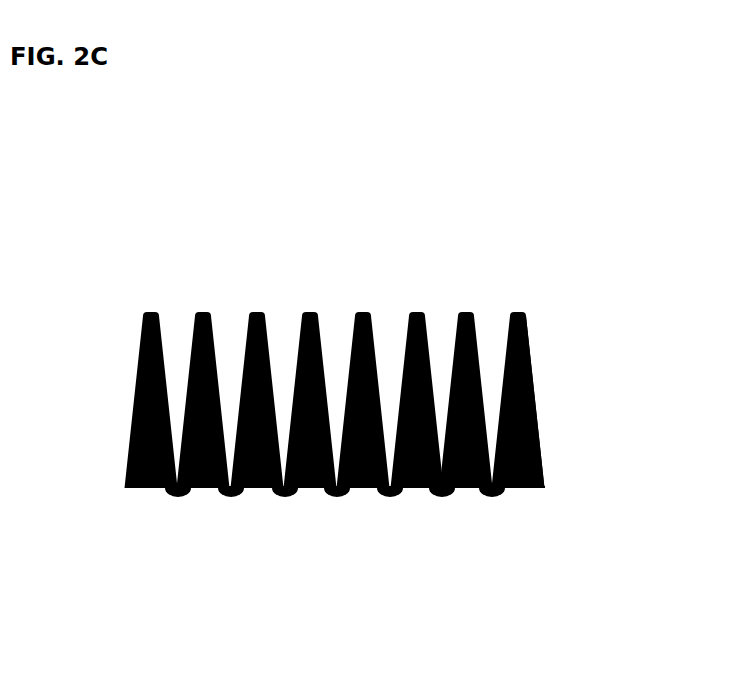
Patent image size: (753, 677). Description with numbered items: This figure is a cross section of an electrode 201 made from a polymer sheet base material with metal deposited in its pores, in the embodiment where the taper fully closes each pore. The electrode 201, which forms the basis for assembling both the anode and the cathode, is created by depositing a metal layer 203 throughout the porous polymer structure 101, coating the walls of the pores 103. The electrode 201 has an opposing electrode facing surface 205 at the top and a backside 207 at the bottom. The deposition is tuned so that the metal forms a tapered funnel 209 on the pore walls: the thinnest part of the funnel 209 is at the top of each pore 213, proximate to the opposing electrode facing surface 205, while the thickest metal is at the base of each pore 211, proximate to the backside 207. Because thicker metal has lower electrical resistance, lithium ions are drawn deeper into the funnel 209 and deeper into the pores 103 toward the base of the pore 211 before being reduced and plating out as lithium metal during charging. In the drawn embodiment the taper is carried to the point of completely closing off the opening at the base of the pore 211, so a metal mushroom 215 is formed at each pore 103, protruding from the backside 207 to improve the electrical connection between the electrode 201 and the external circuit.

The electrode 201 is at (643, 233).
The opposing electrode facing surface 205 is at (140, 298).
The funnel 209 is at (167, 378).
The porous polymer structure 101 is at (305, 317).
The pores 103 is at (392, 393).
The top of each pore 213 is at (439, 330).
The metal layer 203 is at (528, 315).
The metal mushroom 215 is at (285, 500).
The base of each pore 211 is at (453, 503).
The backside 207 is at (145, 513).